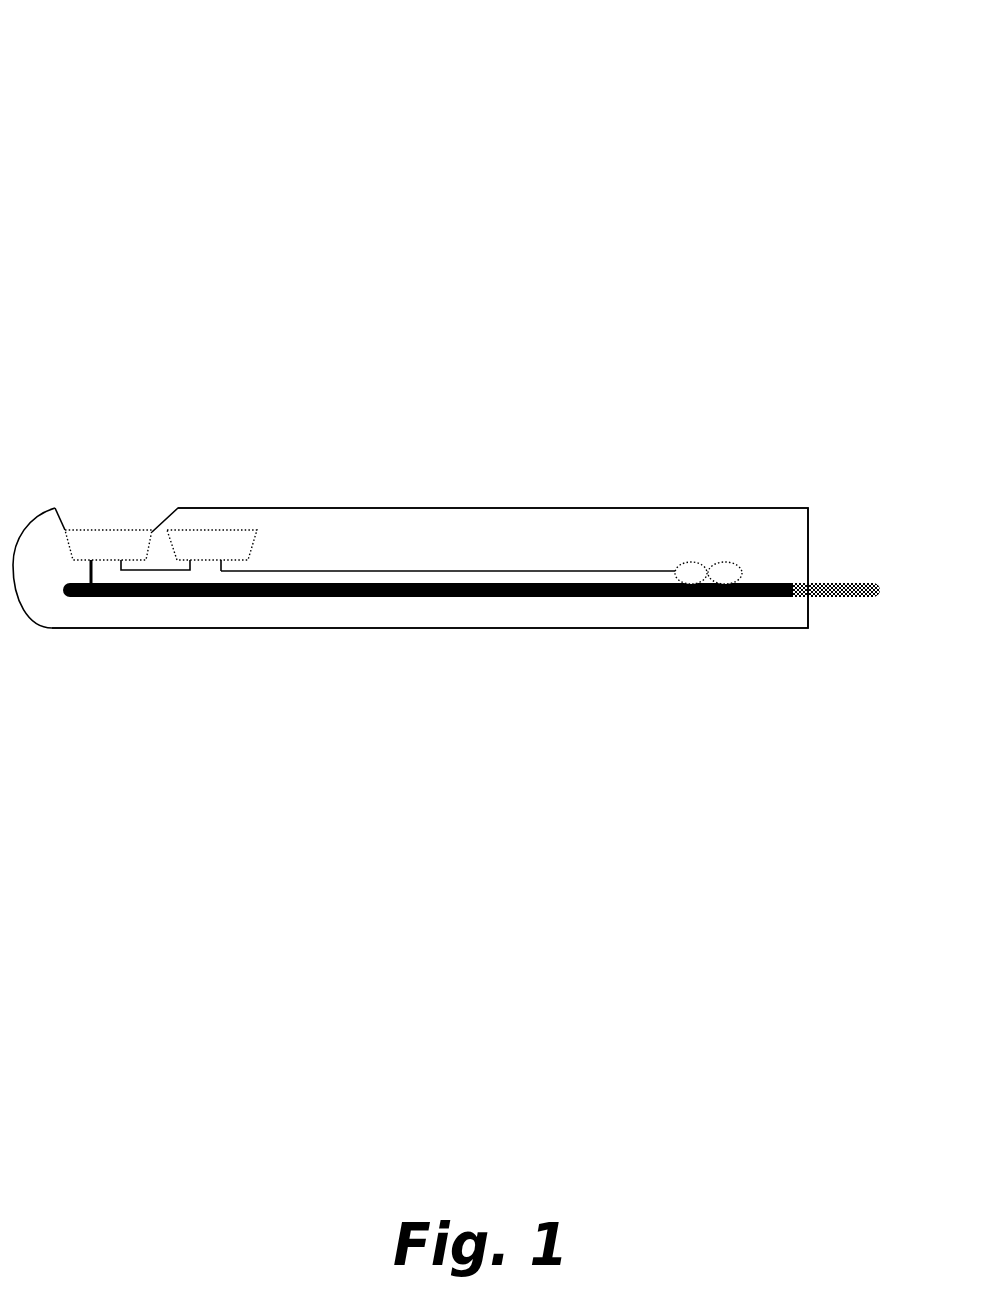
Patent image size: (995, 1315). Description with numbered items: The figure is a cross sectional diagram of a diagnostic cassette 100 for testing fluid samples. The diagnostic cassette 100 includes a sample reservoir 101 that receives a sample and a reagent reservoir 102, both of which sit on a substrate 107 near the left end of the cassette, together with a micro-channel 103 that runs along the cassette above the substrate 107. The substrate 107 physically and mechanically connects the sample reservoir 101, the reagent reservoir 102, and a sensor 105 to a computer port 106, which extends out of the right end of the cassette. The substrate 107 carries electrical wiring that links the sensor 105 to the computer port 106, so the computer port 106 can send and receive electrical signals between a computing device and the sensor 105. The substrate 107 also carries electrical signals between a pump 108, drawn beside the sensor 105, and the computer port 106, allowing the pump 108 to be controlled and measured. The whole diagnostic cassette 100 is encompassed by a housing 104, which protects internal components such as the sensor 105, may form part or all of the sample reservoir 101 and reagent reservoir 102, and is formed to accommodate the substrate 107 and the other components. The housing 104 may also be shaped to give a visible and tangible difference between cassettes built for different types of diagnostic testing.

The diagnostic cassette 100 is at (207, 100).
The sample reservoir 101 is at (110, 545).
The reagent reservoir 102 is at (212, 545).
The micro-channel 103 is at (348, 580).
The housing 104 is at (510, 508).
The sensor 105 is at (692, 573).
The computer port 106 is at (830, 588).
The substrate 107 is at (432, 597).
The pump 108 is at (723, 575).